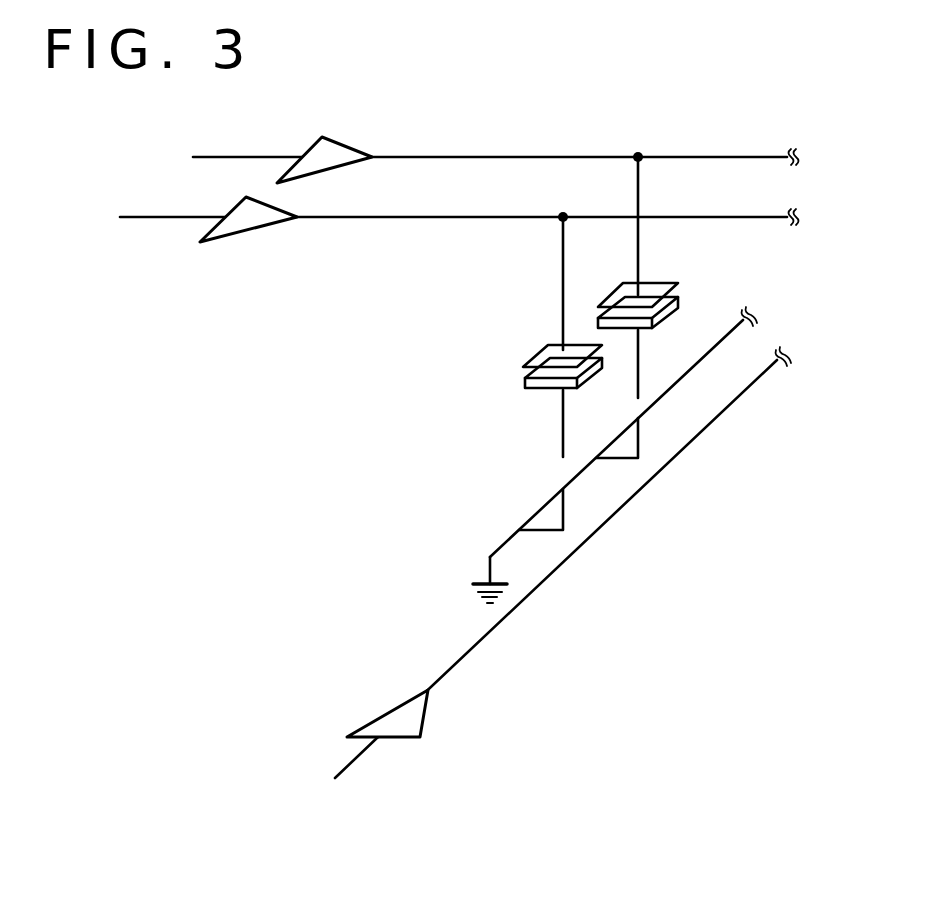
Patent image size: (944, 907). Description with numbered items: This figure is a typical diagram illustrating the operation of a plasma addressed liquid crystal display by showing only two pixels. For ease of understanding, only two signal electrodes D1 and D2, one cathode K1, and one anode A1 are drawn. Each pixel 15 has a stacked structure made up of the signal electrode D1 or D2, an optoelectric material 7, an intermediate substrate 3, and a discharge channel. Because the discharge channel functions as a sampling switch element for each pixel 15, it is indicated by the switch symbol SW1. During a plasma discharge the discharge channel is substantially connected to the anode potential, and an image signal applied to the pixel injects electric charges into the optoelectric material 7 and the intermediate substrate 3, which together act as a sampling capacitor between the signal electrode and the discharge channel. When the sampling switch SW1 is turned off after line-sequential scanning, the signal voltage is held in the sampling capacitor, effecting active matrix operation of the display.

The intermediate substrate 3 is at (668, 312).
The optoelectric material 7 is at (670, 292).
The pixel 15 is at (611, 343).
The signal electrode D1 is at (618, 292).
The signal electrode D2 is at (545, 353).
The cathode K1 is at (563, 542).
The sampling switch SW1 is at (638, 424).
The anode A1 is at (475, 567).